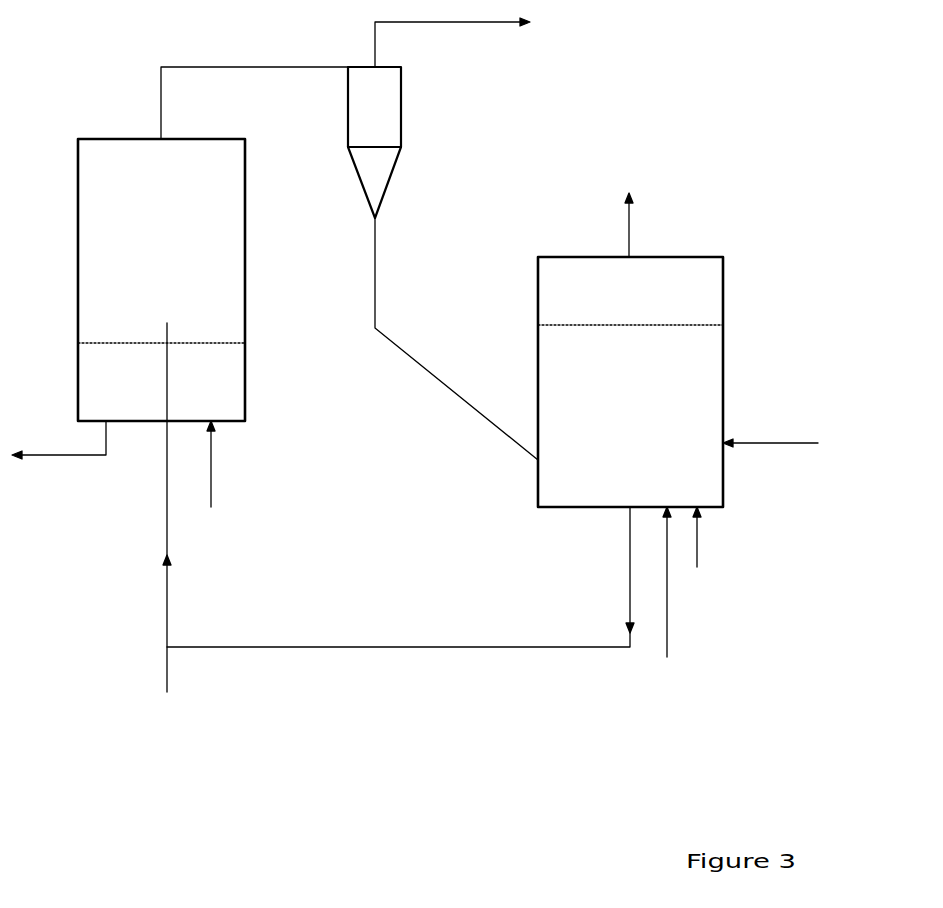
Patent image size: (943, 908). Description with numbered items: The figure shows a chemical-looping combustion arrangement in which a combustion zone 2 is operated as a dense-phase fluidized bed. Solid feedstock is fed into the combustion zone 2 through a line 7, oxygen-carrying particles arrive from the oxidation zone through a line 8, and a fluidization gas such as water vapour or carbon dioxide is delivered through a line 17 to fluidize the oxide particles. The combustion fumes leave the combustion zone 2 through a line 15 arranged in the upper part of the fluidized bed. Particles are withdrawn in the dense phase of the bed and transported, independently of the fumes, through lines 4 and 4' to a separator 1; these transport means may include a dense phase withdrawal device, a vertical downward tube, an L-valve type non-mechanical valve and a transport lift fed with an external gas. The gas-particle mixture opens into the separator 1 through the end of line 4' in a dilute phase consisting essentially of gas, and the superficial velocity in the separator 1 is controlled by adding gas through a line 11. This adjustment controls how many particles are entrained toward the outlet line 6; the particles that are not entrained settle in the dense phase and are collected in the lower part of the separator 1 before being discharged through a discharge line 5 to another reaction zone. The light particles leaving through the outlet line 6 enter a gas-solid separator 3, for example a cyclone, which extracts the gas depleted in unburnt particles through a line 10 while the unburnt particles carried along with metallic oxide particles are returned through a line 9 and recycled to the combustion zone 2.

The separator 1 is at (78, 258).
The combustion zone 2 is at (724, 338).
The gas-solid separator 3 is at (380, 117).
The intake line 4 is at (400, 577).
The transport line 4' is at (205, 507).
The discharge line 5 is at (40, 455).
The outlet line 6 is at (176, 64).
The solid feedstock line 7 is at (697, 545).
The oxygen-carrying particle line 8 is at (743, 440).
The recycle line 9 is at (377, 322).
The gas outlet line 10 is at (502, 27).
The gas addition line 11 is at (211, 465).
The combustion fumes line 15 is at (630, 226).
The fluidization gas line 17 is at (667, 637).